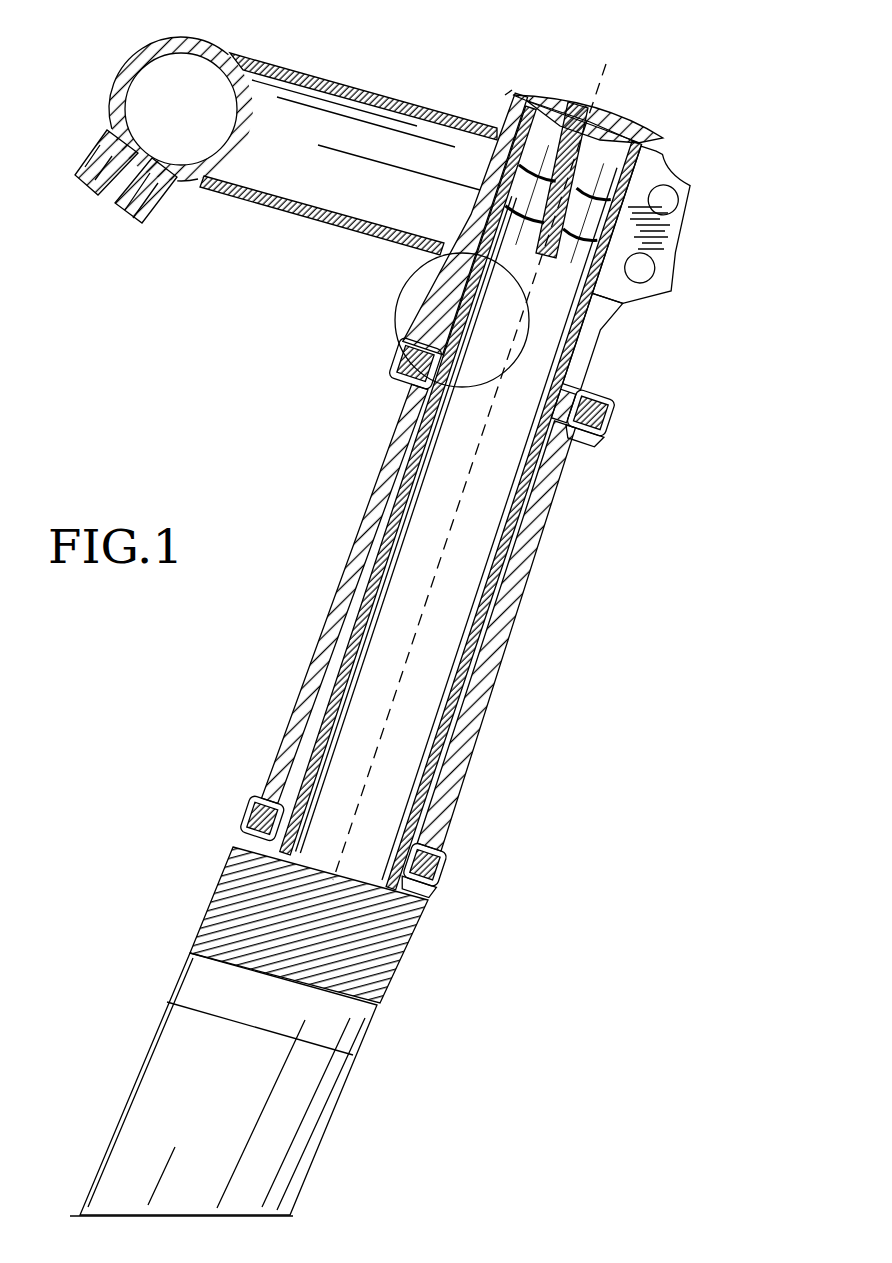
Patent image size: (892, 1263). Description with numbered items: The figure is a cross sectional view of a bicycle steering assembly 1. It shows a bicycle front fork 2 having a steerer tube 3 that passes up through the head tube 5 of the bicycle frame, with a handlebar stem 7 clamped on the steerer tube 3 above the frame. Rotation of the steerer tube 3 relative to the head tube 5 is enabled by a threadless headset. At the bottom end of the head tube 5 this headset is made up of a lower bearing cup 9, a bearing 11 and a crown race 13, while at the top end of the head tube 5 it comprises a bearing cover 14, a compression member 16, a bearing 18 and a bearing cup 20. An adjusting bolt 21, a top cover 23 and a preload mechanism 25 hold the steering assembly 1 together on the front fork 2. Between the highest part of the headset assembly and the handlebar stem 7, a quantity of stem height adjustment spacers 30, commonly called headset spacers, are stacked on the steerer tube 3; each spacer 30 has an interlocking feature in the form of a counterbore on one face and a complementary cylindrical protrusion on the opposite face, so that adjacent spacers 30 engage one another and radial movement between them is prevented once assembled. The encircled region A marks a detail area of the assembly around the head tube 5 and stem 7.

The steering assembly 1 is at (700, 73).
The bicycle front fork 2 is at (348, 1104).
The steerer tube 3 is at (398, 536).
The head tube 5 is at (522, 615).
The handlebar stem 7 is at (372, 95).
The lower bearing cup 9 is at (450, 852).
The bearing 11 is at (245, 805).
The crown race 13 is at (428, 890).
The bearing cover 14 is at (600, 400).
The compression member 16 is at (560, 400).
The bearing 18 is at (390, 382).
The bearing cup 20 is at (596, 438).
The adjusting bolt 21 is at (612, 95).
The top cover 23 is at (548, 92).
The preload mechanism 25 is at (668, 124).
The spacers 30 is at (622, 322).
The detail region A is at (392, 300).